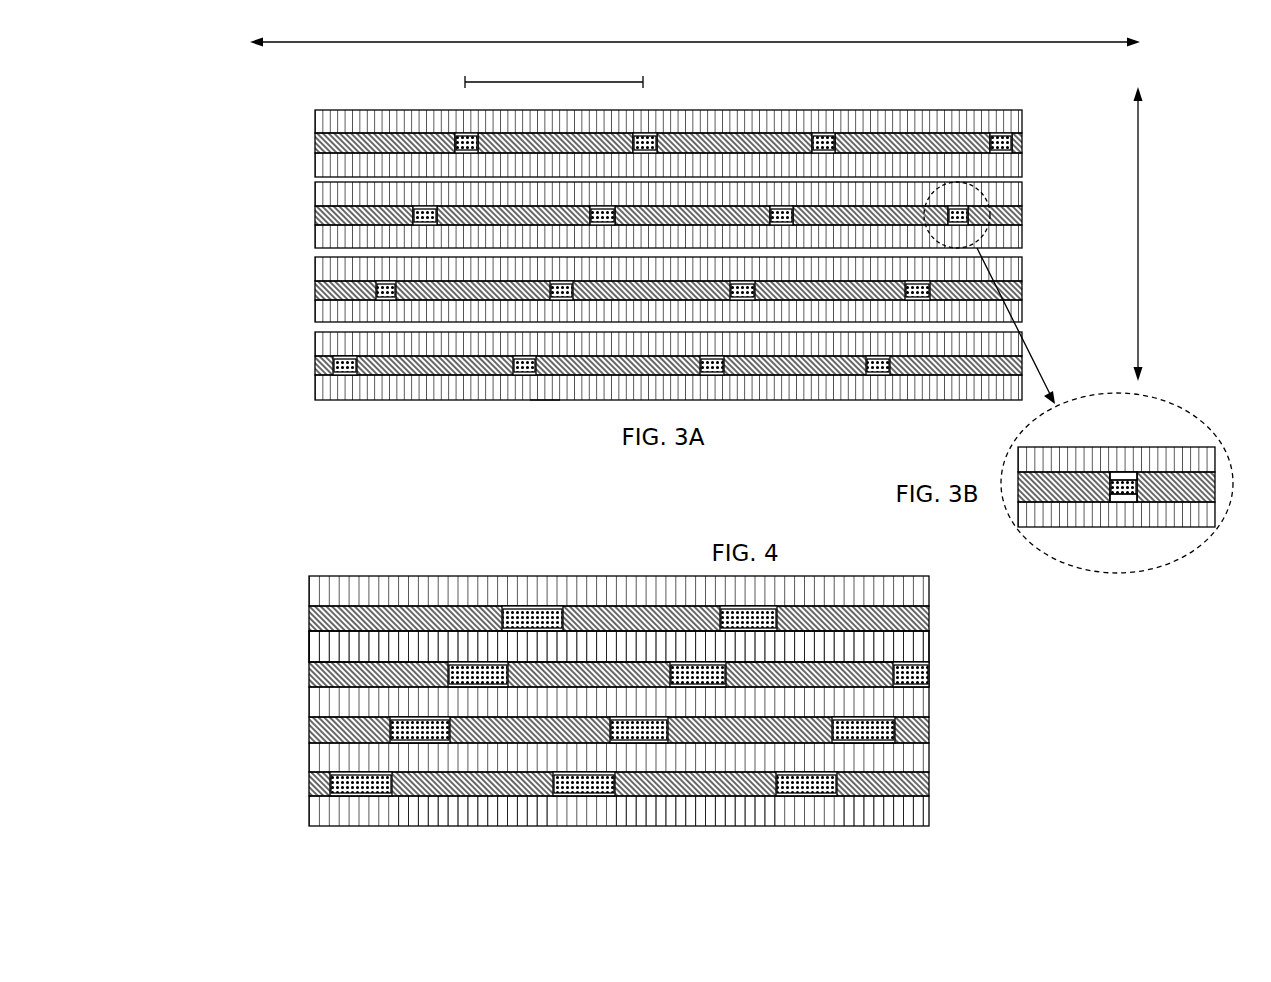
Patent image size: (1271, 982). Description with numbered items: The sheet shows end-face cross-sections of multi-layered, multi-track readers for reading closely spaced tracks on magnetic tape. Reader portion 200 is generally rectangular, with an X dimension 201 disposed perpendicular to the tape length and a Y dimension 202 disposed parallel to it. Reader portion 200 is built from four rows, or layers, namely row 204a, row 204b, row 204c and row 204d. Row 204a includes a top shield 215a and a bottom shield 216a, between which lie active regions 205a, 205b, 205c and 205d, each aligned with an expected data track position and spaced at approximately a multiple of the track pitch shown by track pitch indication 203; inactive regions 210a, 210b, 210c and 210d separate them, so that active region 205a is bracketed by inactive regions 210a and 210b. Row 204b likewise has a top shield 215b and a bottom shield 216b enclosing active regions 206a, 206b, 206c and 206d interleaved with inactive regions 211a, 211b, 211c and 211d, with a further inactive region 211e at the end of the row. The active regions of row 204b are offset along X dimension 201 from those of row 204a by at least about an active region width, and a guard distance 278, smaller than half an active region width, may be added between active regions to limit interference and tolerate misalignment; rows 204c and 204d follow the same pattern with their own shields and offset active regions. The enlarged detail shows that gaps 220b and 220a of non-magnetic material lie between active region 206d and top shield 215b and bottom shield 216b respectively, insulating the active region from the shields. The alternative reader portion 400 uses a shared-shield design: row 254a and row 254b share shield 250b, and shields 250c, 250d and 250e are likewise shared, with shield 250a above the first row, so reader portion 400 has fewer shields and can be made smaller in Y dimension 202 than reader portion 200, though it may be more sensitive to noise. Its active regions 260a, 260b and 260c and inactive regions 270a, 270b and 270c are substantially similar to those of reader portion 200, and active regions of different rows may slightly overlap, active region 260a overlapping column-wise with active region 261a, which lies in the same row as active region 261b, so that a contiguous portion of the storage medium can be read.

In FIG. 3A, the reader portion 200 is at (330, 93).
In FIG. 3A, the X dimension 201 is at (743, 42).
In FIG. 3A, the Y dimension 202 is at (1138, 140).
In FIG. 3A, the track pitch indication 203 is at (643, 77).
In FIG. 3A, the row 204a is at (275, 102).
In FIG. 3A, the row 204b is at (275, 180).
In FIG. 3A, the row 204c is at (310, 253).
In FIG. 3A, the row 204d is at (310, 328).
In FIG. 3A, the active region 205a is at (473, 133).
In FIG. 3A, the active region 205b is at (653, 133).
In FIG. 3A, the active region 205c is at (827, 133).
In FIG. 3A, the active region 205d is at (1000, 133).
In FIG. 3A, the active region 206a is at (420, 207).
In FIG. 3A, the active region 206b is at (601, 226).
In FIG. 3A, the active region 206c is at (782, 225).
In FIG. 3A, the active region 206d is at (957, 208).
In FIG. 3B, the active region 206d is at (1125, 478).
In FIG. 3A, the inactive region 210a is at (317, 147).
In FIG. 3A, the inactive region 210b is at (640, 157).
In FIG. 3A, the inactive region 210c is at (735, 132).
In FIG. 3A, the inactive region 210d is at (913, 132).
In FIG. 3A, the inactive region 211a is at (317, 212).
In FIG. 3A, the inactive region 211b is at (500, 206).
In FIG. 3A, the inactive region 211c is at (710, 206).
In FIG. 3A, the inactive region 211d is at (820, 206).
In FIG. 3A, the conductive electrode segment 211e is at (1023, 215).
In FIG. 3A, the top shield 215a is at (1023, 120).
In FIG. 3A, the top shield 215b is at (1023, 195).
In FIG. 3B, the top shield 215b is at (1018, 458).
In FIG. 3A, the bottom shield 216a is at (1023, 162).
In FIG. 3A, the bottom shield 216b is at (1023, 240).
In FIG. 3B, the bottom shield 216b is at (1018, 510).
In FIG. 3B, the gap 220a is at (1128, 497).
In FIG. 3B, the gap 220b is at (1133, 480).
In FIG. 3A, the guard distance 278 is at (537, 401).
In FIG. 4, the reader portion 400 is at (453, 557).
In FIG. 4, the dielectric layer 250a is at (930, 592).
In FIG. 4, the shield 250b is at (930, 648).
In FIG. 4, the shield 250c is at (930, 705).
In FIG. 4, the shield 250d is at (930, 760).
In FIG. 4, the shield 250e is at (930, 805).
In FIG. 4, the row 254a is at (306, 574).
In FIG. 4, the row 254b is at (280, 630).
In FIG. 4, the active region 260a is at (362, 797).
In FIG. 4, the active region 260b is at (575, 797).
In FIG. 4, the active region 260c is at (805, 797).
In FIG. 4, the active region 261a is at (420, 741).
In FIG. 4, the via 261b is at (640, 740).
In FIG. 4, the inactive region 270a is at (473, 800).
In FIG. 4, the inactive region 270b is at (697, 800).
In FIG. 4, the inactive region 270c is at (882, 800).